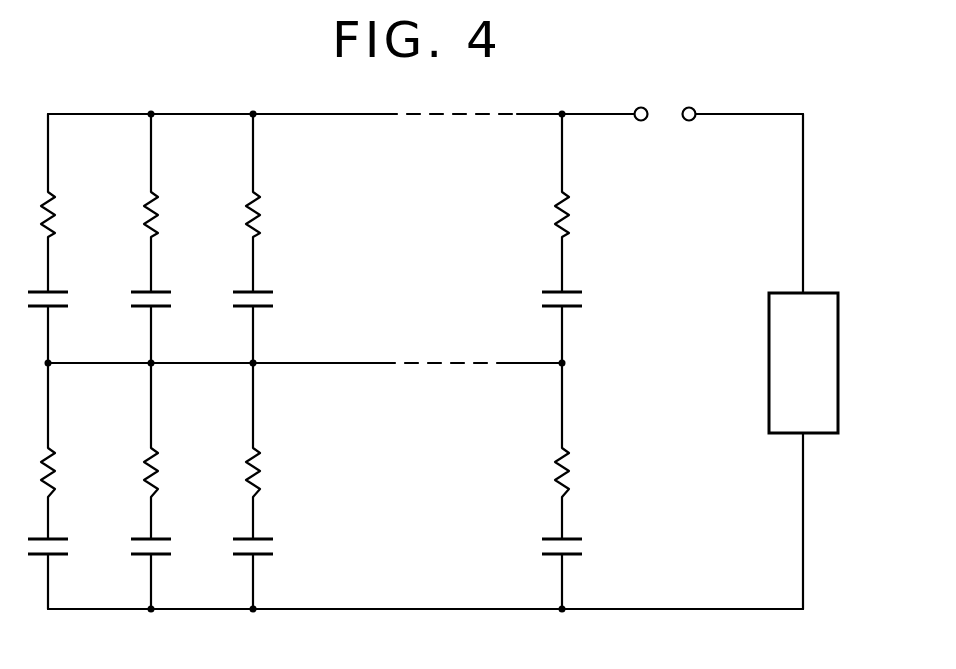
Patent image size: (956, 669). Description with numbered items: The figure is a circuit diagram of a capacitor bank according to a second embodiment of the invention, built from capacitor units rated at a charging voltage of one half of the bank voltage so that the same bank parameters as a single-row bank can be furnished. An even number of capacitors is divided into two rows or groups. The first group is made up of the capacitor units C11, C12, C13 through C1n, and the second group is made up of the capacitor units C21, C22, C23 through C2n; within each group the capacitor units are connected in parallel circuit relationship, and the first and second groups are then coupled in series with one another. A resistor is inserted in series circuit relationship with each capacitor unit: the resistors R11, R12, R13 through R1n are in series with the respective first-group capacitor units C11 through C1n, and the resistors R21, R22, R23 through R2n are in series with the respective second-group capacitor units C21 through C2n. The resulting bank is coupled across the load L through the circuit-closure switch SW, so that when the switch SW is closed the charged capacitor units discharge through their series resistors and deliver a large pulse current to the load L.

The resistor R11 is at (72, 203).
The resistor R12 is at (175, 203).
The resistor R13 is at (277, 203).
The resistor R1n is at (586, 203).
The capacitor unit C11 is at (65, 317).
The capacitor unit C12 is at (168, 317).
The capacitor unit C13 is at (271, 317).
The capacitor unit C1n is at (577, 317).
The resistor R21 is at (72, 457).
The resistor R22 is at (176, 457).
The resistor R23 is at (277, 457).
The resistor R2n is at (584, 456).
The capacitor unit C21 is at (65, 563).
The capacitor unit C22 is at (168, 563).
The capacitor unit C23 is at (271, 563).
The capacitor unit C2n is at (577, 563).
The circuit-closure switch SW is at (665, 98).
The load L is at (814, 363).